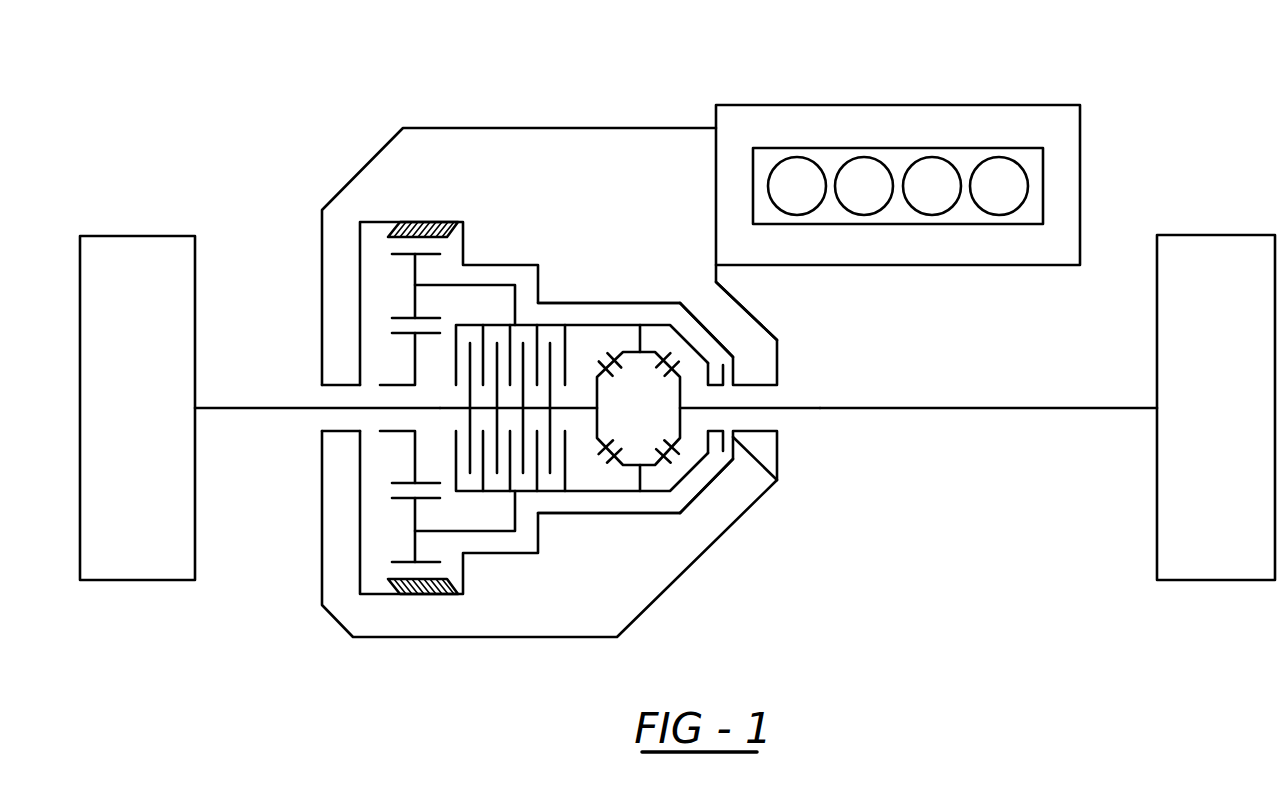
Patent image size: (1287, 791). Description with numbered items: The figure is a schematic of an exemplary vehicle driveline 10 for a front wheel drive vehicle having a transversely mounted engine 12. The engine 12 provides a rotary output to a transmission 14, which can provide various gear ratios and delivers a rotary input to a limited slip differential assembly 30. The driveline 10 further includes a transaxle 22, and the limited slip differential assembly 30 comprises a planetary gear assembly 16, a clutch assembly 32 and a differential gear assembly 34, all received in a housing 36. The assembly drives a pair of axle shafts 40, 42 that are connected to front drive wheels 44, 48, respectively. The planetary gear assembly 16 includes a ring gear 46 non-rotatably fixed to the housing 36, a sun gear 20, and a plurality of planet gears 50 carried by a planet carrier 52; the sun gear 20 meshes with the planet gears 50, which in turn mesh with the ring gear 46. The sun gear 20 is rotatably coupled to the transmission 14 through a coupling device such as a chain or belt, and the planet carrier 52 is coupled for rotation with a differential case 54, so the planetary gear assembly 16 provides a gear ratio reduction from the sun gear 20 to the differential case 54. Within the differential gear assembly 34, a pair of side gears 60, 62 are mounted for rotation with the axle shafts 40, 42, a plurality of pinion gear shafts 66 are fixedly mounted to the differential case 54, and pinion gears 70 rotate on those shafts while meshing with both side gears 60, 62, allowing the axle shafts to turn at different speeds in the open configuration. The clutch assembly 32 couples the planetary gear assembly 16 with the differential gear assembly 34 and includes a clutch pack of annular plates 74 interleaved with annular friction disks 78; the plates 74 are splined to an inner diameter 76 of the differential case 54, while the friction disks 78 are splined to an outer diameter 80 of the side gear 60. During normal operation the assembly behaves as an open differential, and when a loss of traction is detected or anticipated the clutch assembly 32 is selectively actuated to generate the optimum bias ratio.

The vehicle driveline 10 is at (1175, 110).
The engine 12 is at (888, 115).
The transmission 14 is at (530, 148).
The planetary gear assembly 16 is at (378, 240).
The sun gear 20 is at (415, 360).
The transaxle 22 is at (337, 262).
The limited slip differential assembly 30 is at (601, 312).
The clutch assembly 32 is at (475, 507).
The differential gear assembly 34 is at (698, 333).
The housing 36 is at (577, 303).
The axle shaft 40 is at (245, 408).
The axle shaft 42 is at (950, 408).
The front drive wheel 44 is at (134, 268).
The ring gear 46 is at (422, 222).
The front drive wheel 48 is at (1200, 562).
The planet gears 50 is at (415, 272).
The planet carrier 52 is at (495, 285).
The differential case 54 is at (705, 360).
The side gear 60 is at (598, 440).
The side gear 62 is at (683, 418).
The pinion gear shafts 66 is at (652, 345).
The pinion gears 70 is at (624, 352).
The annular plates 74 is at (483, 475).
The inner diameter 76 is at (497, 330).
The annular friction disks 78 is at (467, 355).
The outer diameter 80 is at (583, 408).